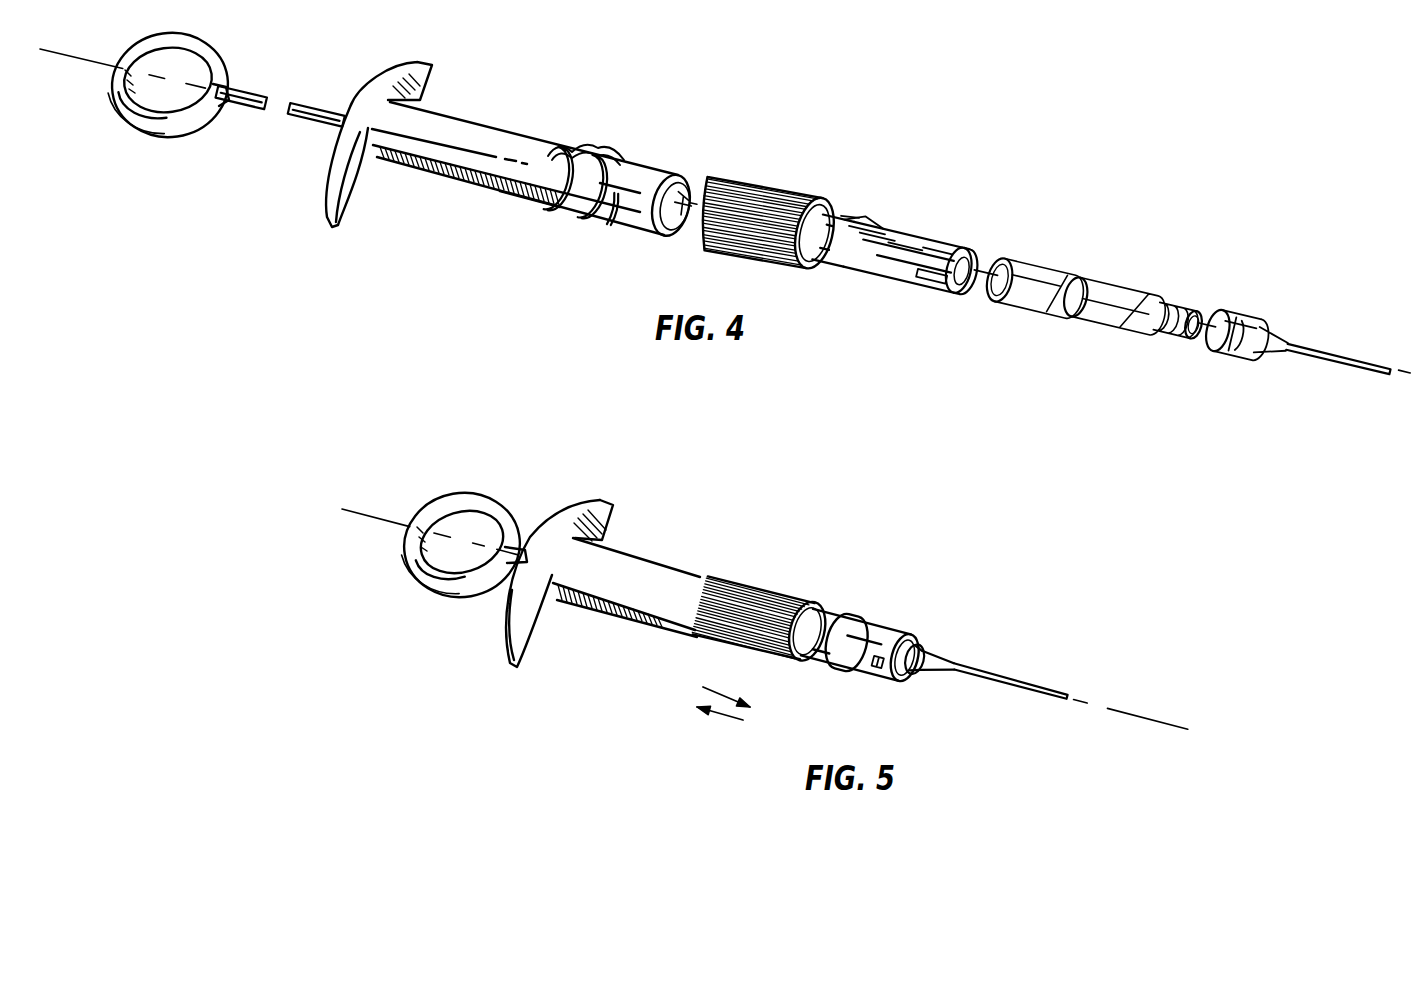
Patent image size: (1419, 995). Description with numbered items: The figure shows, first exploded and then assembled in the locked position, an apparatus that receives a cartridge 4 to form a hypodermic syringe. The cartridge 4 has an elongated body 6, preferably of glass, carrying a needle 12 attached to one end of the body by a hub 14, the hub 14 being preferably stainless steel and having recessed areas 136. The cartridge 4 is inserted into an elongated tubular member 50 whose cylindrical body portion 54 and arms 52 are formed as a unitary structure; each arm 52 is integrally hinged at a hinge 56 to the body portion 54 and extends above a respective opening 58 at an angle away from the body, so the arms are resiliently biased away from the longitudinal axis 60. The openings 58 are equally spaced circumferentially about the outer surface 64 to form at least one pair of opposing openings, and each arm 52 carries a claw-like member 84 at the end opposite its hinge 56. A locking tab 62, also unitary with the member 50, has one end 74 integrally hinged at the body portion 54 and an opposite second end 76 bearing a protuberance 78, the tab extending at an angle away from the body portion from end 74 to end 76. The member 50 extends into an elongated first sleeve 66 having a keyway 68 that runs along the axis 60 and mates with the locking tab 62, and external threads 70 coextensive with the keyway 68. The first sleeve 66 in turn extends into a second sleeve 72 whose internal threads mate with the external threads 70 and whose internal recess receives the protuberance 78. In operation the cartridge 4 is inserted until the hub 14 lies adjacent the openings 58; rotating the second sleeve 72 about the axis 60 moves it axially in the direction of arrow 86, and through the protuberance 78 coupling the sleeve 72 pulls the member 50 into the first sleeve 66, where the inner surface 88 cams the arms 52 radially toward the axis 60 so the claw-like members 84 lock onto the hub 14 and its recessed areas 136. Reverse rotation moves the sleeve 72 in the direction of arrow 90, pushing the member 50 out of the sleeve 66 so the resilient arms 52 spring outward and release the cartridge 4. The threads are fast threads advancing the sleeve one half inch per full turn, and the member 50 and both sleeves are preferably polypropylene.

In FIG. 4, the cartridge 4 is at (1160, 283).
In FIG. 5, the elongated body 6 is at (682, 602).
In FIG. 4, the needle 12 is at (1330, 363).
In FIG. 5, the needle 12 is at (1028, 682).
In FIG. 4, the hub 14 is at (1233, 317).
In FIG. 5, the hub 14 is at (935, 667).
In FIG. 4, the elongated tubular member 50 is at (920, 197).
In FIG. 4, the arm 52 is at (930, 267).
In FIG. 5, the arm 52 is at (875, 657).
In FIG. 4, the body portion 54 is at (892, 244).
In FIG. 4, the hinge 56 is at (910, 240).
In FIG. 4, the opening 58 is at (957, 243).
In FIG. 4, the longitudinal axis 60 is at (680, 227).
In FIG. 5, the longitudinal axis 60 is at (1113, 717).
In FIG. 4, the locking tab 62 is at (853, 220).
In FIG. 4, the outer surface 64 is at (827, 270).
In FIG. 5, the outer surface 64 is at (907, 630).
In FIG. 4, the first sleeve 66 is at (453, 193).
In FIG. 5, the first sleeve 66 is at (604, 637).
In FIG. 4, the keyway 68 is at (628, 160).
In FIG. 4, the external threads 70 is at (547, 207).
In FIG. 4, the second sleeve 72 is at (780, 182).
In FIG. 5, the second sleeve 72 is at (767, 580).
In FIG. 4, the one end 74 is at (873, 227).
In FIG. 4, the second end 76 is at (848, 217).
In FIG. 4, the protuberance 78 is at (847, 207).
In FIG. 4, the claw-like member 84 is at (977, 248).
In FIG. 5, the arrow 86 is at (727, 713).
In FIG. 4, the inner surface 88 is at (682, 190).
In FIG. 5, the inner surface 88 is at (873, 620).
In FIG. 5, the arrow 90 is at (720, 690).
In FIG. 4, the recessed areas 136 is at (1257, 330).